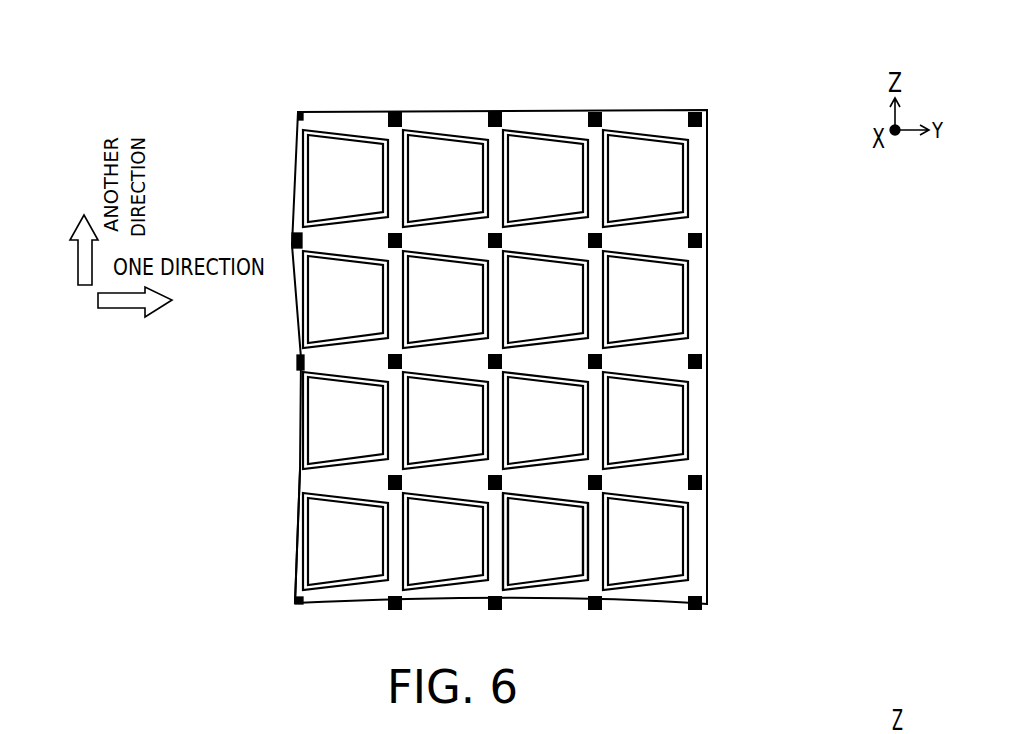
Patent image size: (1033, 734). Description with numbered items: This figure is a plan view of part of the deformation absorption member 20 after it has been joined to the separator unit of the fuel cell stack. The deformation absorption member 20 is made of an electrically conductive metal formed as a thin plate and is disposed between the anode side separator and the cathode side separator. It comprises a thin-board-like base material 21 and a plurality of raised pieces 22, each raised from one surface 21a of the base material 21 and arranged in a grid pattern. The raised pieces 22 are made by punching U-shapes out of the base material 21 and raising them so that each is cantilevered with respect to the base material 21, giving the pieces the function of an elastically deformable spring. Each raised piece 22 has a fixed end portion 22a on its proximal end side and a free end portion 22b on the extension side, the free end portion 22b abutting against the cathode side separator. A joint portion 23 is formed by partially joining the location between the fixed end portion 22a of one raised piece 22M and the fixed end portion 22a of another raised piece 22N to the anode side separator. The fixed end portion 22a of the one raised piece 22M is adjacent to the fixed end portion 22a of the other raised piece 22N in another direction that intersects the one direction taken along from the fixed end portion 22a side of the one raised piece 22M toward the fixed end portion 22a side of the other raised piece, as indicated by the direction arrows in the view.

The deformation absorption member 20 is at (58, 96).
The base material 21 is at (298, 387).
The one surface of the base material 21a is at (302, 555).
The raised piece 22 is at (548, 570).
The fixed end portion 22a is at (505, 548).
The free end portion 22b is at (582, 548).
The one raised piece 22M is at (673, 418).
The other raised piece 22N is at (673, 295).
The joint portion 23 is at (595, 353).